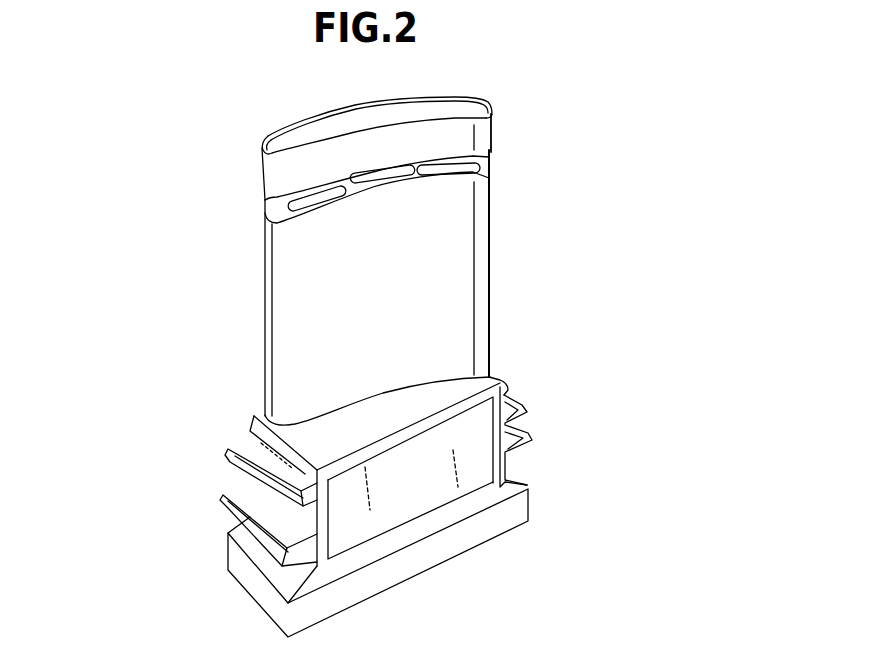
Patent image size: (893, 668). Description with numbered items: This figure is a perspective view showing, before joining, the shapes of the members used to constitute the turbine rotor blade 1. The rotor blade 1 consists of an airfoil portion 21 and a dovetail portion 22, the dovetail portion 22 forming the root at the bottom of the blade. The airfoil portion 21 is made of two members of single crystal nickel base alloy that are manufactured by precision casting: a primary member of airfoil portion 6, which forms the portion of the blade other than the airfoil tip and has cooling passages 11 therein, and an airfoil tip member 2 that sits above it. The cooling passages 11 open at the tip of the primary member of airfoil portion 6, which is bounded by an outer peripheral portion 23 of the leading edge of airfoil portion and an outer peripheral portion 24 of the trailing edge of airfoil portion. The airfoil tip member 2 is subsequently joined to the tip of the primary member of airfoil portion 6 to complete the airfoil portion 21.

The rotor blade 1 is at (237, 387).
The airfoil tip member 2 is at (312, 138).
The cooling passages 11 is at (333, 192).
The airfoil portion 21 is at (437, 260).
The dovetail portion 22 is at (407, 497).
The outer peripheral portion of the leading edge of airfoil portion 23 is at (265, 295).
The outer peripheral portion of the trailing edge of airfoil portion 24 is at (492, 308).
The primary member of airfoil portion 6 is at (280, 358).